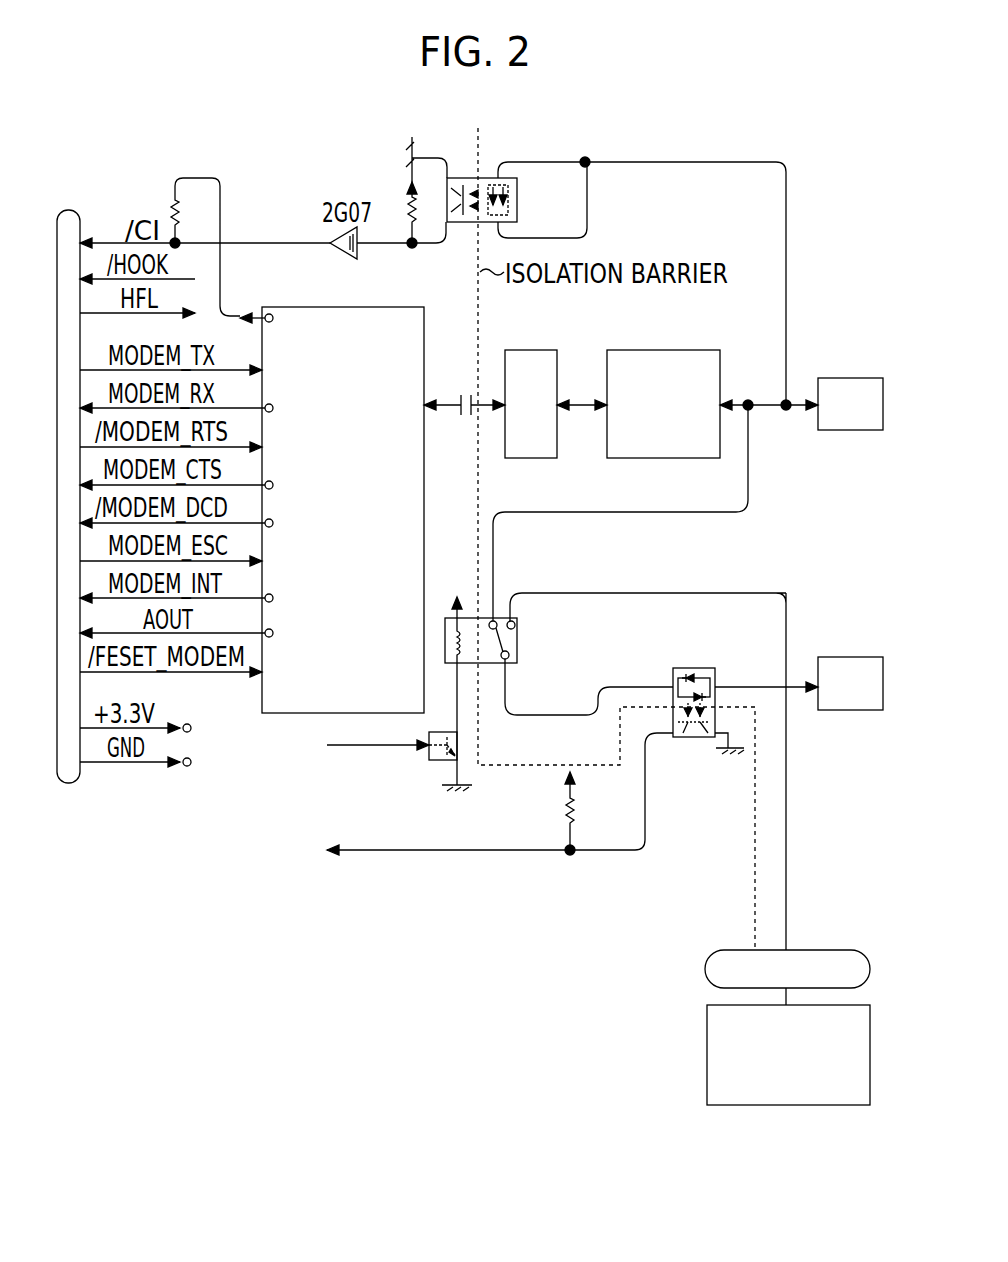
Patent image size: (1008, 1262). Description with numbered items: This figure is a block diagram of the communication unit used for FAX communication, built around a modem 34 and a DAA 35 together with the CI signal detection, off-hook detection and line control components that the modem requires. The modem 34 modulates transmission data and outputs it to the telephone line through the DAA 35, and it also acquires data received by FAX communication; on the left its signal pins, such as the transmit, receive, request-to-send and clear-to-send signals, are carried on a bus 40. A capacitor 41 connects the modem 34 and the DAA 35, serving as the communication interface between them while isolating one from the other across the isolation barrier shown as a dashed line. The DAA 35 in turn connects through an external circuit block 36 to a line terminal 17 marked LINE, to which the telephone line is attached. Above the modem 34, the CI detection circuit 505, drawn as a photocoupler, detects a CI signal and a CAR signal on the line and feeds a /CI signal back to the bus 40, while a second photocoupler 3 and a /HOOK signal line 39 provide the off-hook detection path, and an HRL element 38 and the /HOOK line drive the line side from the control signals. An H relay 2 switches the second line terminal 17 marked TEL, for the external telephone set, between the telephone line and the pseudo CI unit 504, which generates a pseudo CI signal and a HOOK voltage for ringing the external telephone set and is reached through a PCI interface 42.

The H relay 2 is at (517, 663).
The photocoupler (TEL side) 3 is at (693, 737).
The line terminal 17 is at (845, 378).
The modem 34 is at (300, 713).
The DAA 35 is at (530, 350).
The external circuit 36 is at (665, 350).
The HRL switch 38 is at (360, 748).
The /HOOK signal line 39 is at (388, 855).
The bus 40 is at (80, 783).
The capacitor 41 is at (455, 408).
The PCI I/F 42 is at (815, 950).
The pseudo CI unit 504 is at (790, 1105).
The CI detection circuit 505 is at (482, 178).